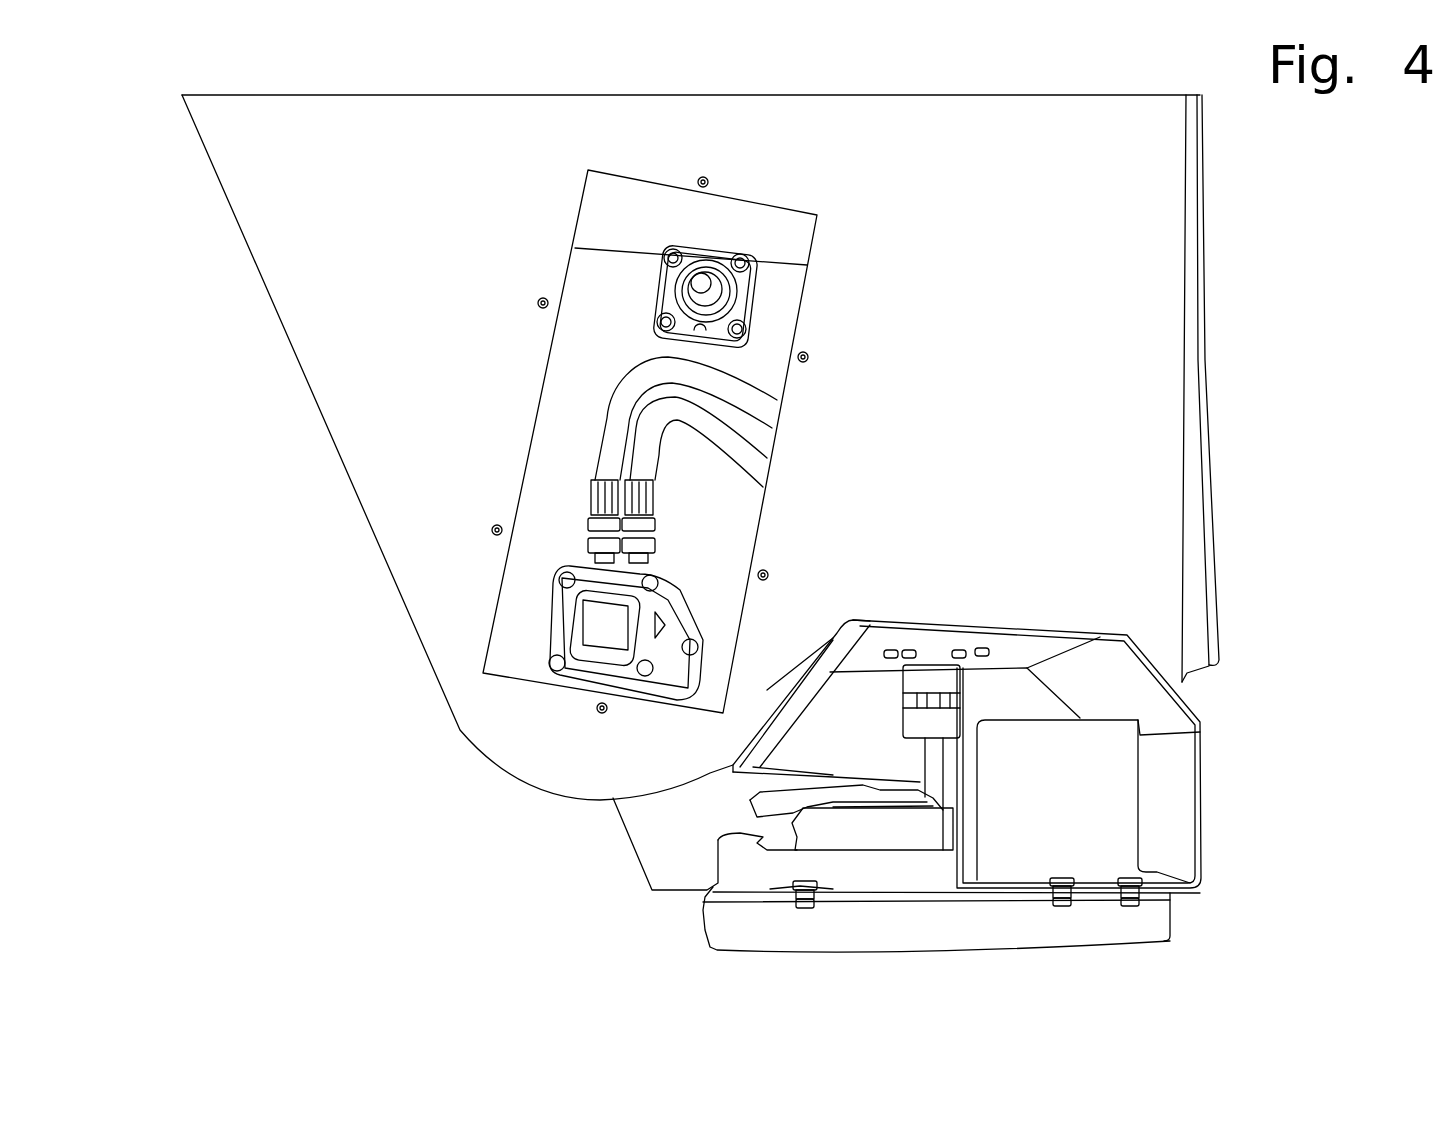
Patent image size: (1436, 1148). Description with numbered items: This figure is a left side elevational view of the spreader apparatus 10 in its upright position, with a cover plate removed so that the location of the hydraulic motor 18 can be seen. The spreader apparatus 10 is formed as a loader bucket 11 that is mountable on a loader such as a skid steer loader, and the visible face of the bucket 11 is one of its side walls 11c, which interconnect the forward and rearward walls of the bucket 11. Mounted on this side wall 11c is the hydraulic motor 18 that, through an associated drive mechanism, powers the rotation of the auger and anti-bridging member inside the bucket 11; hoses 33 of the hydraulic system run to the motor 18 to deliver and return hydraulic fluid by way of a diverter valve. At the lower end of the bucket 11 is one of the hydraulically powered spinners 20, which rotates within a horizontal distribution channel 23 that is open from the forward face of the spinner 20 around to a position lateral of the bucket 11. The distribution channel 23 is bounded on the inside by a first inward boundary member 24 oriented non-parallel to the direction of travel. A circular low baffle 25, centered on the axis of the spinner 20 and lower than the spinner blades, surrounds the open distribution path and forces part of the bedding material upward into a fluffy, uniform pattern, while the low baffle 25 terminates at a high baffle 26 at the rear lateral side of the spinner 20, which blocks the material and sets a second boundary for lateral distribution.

The spreader apparatus 10 is at (345, 745).
The loader bucket 11 is at (360, 383).
The side wall 11c is at (1035, 287).
The hydraulic motor 18 is at (598, 610).
The spinner 20 is at (727, 828).
The distribution channel 23 is at (1176, 906).
The first inward boundary member 24 is at (677, 818).
The low baffle 25 is at (767, 878).
The high baffle 26 is at (1085, 816).
The hoses 33 is at (613, 422).